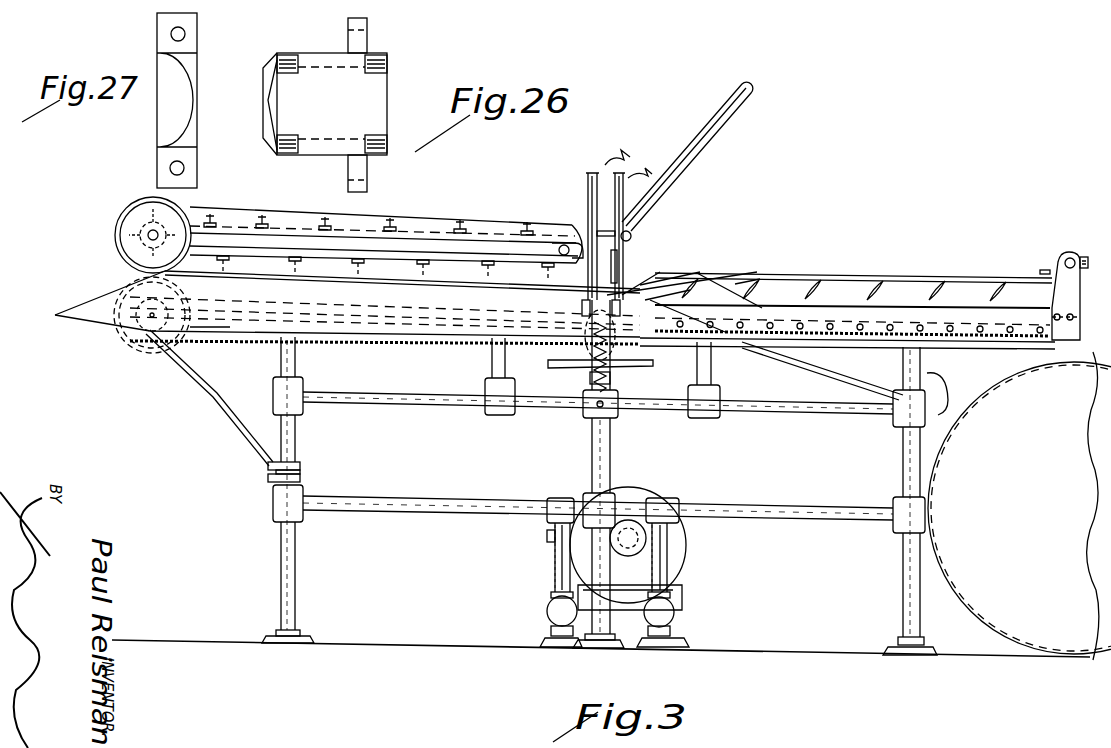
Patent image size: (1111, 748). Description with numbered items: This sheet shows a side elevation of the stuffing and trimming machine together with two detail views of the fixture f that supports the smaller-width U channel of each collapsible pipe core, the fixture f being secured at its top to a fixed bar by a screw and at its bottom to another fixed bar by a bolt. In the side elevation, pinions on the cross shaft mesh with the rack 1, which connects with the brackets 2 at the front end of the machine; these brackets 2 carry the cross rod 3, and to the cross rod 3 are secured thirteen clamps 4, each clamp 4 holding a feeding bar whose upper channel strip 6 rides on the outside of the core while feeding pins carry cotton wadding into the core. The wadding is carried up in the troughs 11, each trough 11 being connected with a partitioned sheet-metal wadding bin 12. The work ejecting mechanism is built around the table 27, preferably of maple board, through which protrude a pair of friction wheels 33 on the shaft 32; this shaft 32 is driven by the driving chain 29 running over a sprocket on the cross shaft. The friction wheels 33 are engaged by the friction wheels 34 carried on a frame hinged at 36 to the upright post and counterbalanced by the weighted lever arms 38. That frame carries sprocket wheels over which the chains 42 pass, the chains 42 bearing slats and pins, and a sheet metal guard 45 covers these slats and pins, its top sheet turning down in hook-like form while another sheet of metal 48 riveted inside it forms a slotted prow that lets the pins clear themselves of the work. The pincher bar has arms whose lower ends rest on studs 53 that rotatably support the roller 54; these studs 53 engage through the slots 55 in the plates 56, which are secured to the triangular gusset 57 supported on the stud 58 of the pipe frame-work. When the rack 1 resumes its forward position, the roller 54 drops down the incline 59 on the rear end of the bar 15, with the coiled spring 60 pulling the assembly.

In FIG. 27, the fixture f is at (157, 150).
In FIG. 26, the fixture f is at (382, 82).
In FIG. 3, the rack 1 is at (827, 320).
In FIG. 3, the bracket 2 is at (1076, 316).
In FIG. 3, the cross rod 3 is at (1071, 256).
In FIG. 3, the clamp 4 is at (1034, 274).
In FIG. 3, the channel strip 6 is at (923, 277).
In FIG. 3, the trough 11 is at (818, 353).
In FIG. 3, the wadding bin 12 is at (990, 392).
In FIG. 3, the bar 15 is at (772, 310).
In FIG. 3, the table 27 is at (384, 289).
In FIG. 3, the driving chain 29 is at (430, 346).
In FIG. 3, the shaft 32 is at (143, 322).
In FIG. 3, the friction wheel 33 is at (150, 342).
In FIG. 3, the friction wheel 34 is at (117, 243).
In FIG. 3, the hinge 36 is at (632, 237).
In FIG. 3, the lever arm 38 is at (697, 152).
In FIG. 3, the chain 42 is at (292, 259).
In FIG. 3, the sheet metal guard 45 is at (360, 228).
In FIG. 3, the sheet of metal 48 is at (566, 262).
In FIG. 3, the stud 53 is at (645, 300).
In FIG. 3, the roller 54 is at (584, 309).
In FIG. 3, the slot 55 is at (640, 285).
In FIG. 3, the plate 56 is at (592, 242).
In FIG. 3, the triangular gusset 57 is at (622, 341).
In FIG. 3, the stud 58 is at (590, 379).
In FIG. 3, the incline 59 is at (742, 282).
In FIG. 3, the coiled spring 60 is at (590, 410).